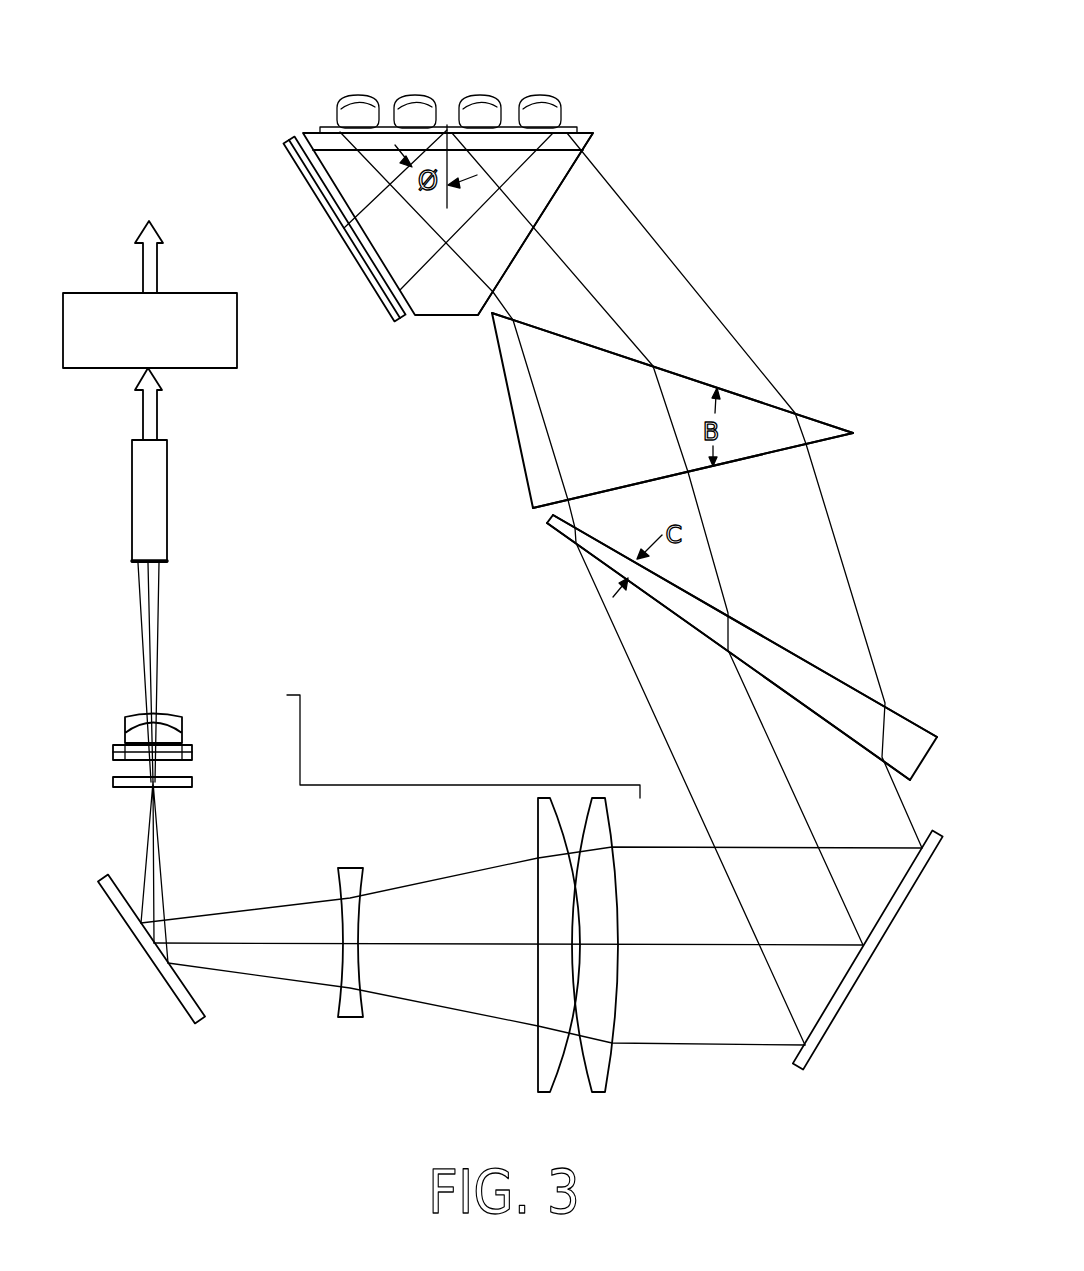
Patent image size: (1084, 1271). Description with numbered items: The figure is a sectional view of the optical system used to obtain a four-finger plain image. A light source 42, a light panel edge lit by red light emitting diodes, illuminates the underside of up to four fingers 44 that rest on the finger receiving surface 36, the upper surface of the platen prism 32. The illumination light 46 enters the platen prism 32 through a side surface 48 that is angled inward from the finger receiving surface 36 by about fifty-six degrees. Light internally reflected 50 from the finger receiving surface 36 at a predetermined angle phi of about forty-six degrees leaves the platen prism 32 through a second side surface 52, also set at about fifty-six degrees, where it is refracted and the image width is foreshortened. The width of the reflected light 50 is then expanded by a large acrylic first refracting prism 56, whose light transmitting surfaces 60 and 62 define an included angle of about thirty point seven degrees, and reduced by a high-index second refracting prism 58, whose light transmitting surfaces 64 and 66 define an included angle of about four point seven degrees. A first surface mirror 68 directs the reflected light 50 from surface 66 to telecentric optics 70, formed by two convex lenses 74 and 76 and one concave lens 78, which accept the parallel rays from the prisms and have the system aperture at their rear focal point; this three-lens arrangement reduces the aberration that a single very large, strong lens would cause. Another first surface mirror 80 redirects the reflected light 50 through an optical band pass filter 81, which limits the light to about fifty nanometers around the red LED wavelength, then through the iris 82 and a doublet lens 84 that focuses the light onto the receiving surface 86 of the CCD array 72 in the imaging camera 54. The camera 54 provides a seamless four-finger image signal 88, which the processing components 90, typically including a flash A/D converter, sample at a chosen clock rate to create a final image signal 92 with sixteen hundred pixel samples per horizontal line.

The platen prism 32 is at (435, 316).
The finger receiving surface 36 is at (572, 126).
The light source 42 is at (287, 139).
The fingers 44 is at (535, 92).
The illumination light 46 is at (420, 265).
The side surface 48 is at (377, 280).
The reflected light 50 is at (633, 218).
The second side surface 52 is at (567, 187).
The imaging camera 54 is at (167, 488).
The first refracting prism 56 is at (583, 434).
The second refracting prism 58 is at (838, 695).
The light transmitting surface 60 is at (733, 388).
The light transmitting surface 62 is at (767, 457).
The light transmitting surface 64 is at (787, 640).
The light transmitting surface 66 is at (805, 707).
The first surface mirror 68 is at (883, 913).
The telecentric optics 70 is at (370, 783).
The CCD array 72 is at (167, 567).
The convex lens 74 is at (603, 1058).
The convex lens 76 is at (543, 1057).
The concave lens 78 is at (352, 865).
The first surface mirror 80 is at (197, 1003).
The optical band pass filter 81 is at (192, 783).
The iris 82 is at (115, 743).
The doublet lens 84 is at (182, 730).
The receiving surface 86 is at (150, 567).
The image signal 88 is at (157, 410).
The processing components 90 is at (238, 337).
The final image signal 92 is at (142, 263).